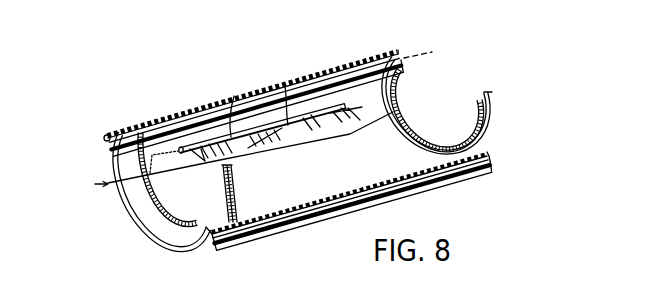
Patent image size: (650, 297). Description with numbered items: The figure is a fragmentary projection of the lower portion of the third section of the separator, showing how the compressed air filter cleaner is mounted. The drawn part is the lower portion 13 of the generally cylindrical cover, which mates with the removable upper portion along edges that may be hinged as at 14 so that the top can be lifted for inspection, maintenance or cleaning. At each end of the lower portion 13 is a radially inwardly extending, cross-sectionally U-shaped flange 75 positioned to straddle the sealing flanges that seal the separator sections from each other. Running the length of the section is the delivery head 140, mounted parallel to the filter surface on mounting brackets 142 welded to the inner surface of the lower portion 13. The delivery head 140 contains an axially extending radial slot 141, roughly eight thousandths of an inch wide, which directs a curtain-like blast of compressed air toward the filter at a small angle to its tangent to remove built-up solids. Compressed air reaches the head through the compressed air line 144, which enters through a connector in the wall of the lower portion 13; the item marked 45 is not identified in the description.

The lower portion of the cover 13 is at (408, 121).
The hinge 14 is at (112, 135).
The hidden coupling member 45 is at (172, 155).
The U-shaped flange 75 is at (124, 153).
The delivery head 140 is at (272, 88).
The radial slot 141 is at (234, 96).
The mounting brackets 142 is at (338, 114).
The compressed air line 144 is at (117, 186).